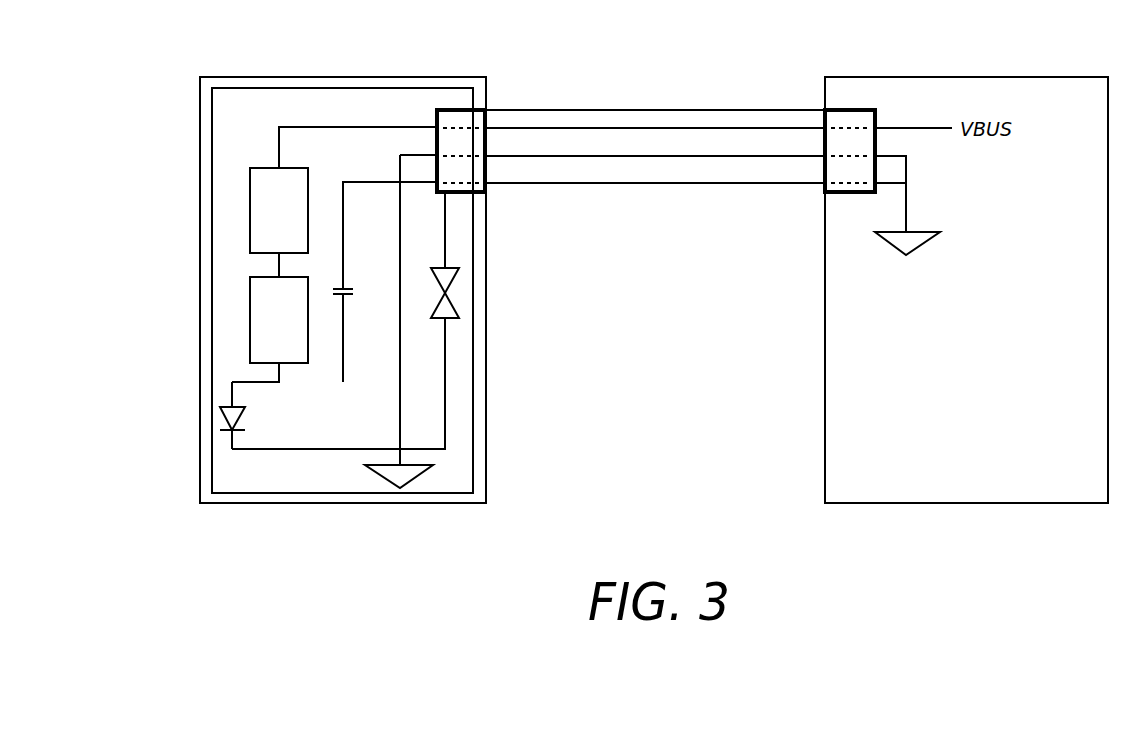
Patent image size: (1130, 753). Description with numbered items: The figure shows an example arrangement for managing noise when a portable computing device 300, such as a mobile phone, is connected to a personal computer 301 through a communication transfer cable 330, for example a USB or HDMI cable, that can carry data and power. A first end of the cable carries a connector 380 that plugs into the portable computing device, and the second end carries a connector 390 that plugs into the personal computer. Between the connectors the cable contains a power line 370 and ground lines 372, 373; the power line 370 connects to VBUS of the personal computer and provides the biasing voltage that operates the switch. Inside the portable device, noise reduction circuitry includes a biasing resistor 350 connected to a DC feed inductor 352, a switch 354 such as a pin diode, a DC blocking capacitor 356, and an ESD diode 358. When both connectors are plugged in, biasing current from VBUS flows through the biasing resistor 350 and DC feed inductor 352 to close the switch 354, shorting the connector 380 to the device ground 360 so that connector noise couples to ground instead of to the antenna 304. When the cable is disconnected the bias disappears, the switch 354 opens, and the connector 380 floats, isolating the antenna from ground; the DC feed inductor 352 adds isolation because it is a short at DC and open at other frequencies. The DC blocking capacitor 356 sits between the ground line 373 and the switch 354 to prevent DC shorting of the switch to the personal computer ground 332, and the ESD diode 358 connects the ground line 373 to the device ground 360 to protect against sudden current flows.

The portable computing device 300 is at (200, 92).
The personal computer 301 is at (825, 85).
The antenna 304 is at (212, 487).
The communication transfer cable 330 is at (584, 110).
The personal computer ground 332 is at (925, 240).
The biasing resistor 350 is at (250, 195).
The DC feed inductor 352 is at (250, 308).
The switch 354 is at (220, 410).
The DC blocking capacitor 356 is at (376, 268).
The ESD diode 358 is at (458, 285).
The device ground 360 is at (417, 470).
The power line 370 is at (682, 128).
The ground line 372 is at (682, 157).
The ground line 373 is at (754, 184).
The connector 380 is at (487, 187).
The connector 390 is at (862, 195).